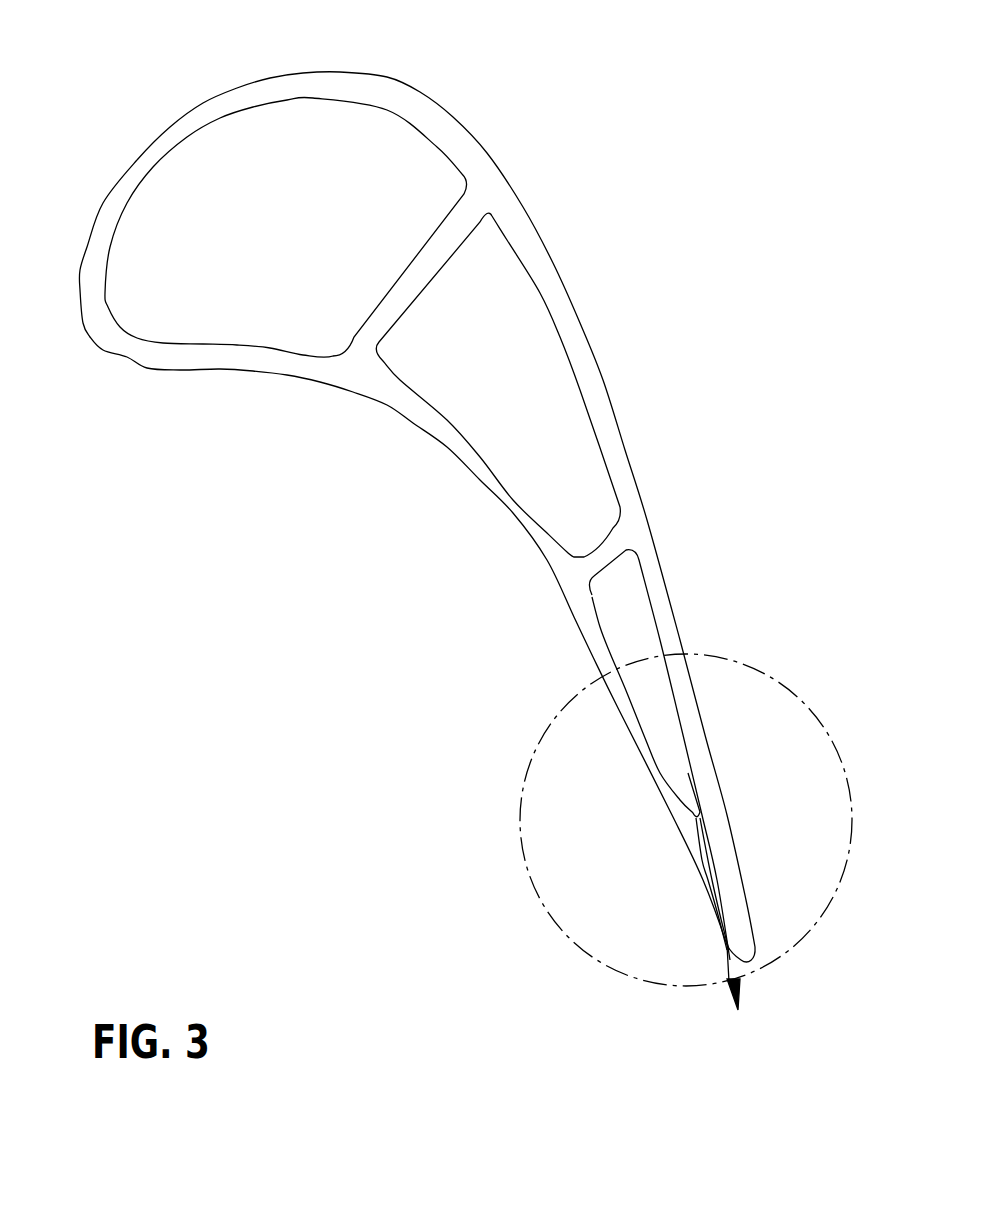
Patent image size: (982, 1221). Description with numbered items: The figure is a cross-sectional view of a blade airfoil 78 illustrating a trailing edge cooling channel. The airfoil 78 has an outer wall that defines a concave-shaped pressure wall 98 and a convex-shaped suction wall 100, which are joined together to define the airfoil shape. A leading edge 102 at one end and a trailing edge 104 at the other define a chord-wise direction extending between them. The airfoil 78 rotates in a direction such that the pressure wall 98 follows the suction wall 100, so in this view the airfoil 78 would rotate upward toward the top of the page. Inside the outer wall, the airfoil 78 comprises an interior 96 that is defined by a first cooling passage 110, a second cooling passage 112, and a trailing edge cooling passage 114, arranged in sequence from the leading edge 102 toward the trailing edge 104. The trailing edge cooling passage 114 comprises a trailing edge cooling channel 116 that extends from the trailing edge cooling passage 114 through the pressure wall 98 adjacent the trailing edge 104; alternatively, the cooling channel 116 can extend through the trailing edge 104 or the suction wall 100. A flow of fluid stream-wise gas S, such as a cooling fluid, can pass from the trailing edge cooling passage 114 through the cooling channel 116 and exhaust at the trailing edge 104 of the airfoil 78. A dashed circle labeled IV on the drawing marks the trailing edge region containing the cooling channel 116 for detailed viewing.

The airfoil 78 is at (422, 540).
The interior 96 is at (286, 186).
The pressure wall 98 is at (413, 424).
The suction wall 100 is at (523, 208).
The leading edge 102 is at (88, 330).
The trailing edge 104 is at (747, 963).
The first cooling passage 110 is at (338, 241).
The second cooling passage 112 is at (503, 378).
The trailing edge cooling passage 114 is at (692, 755).
The trailing edge cooling channel 116 is at (698, 847).
The stream-wise gas S is at (697, 803).
The detail view IV is at (790, 690).